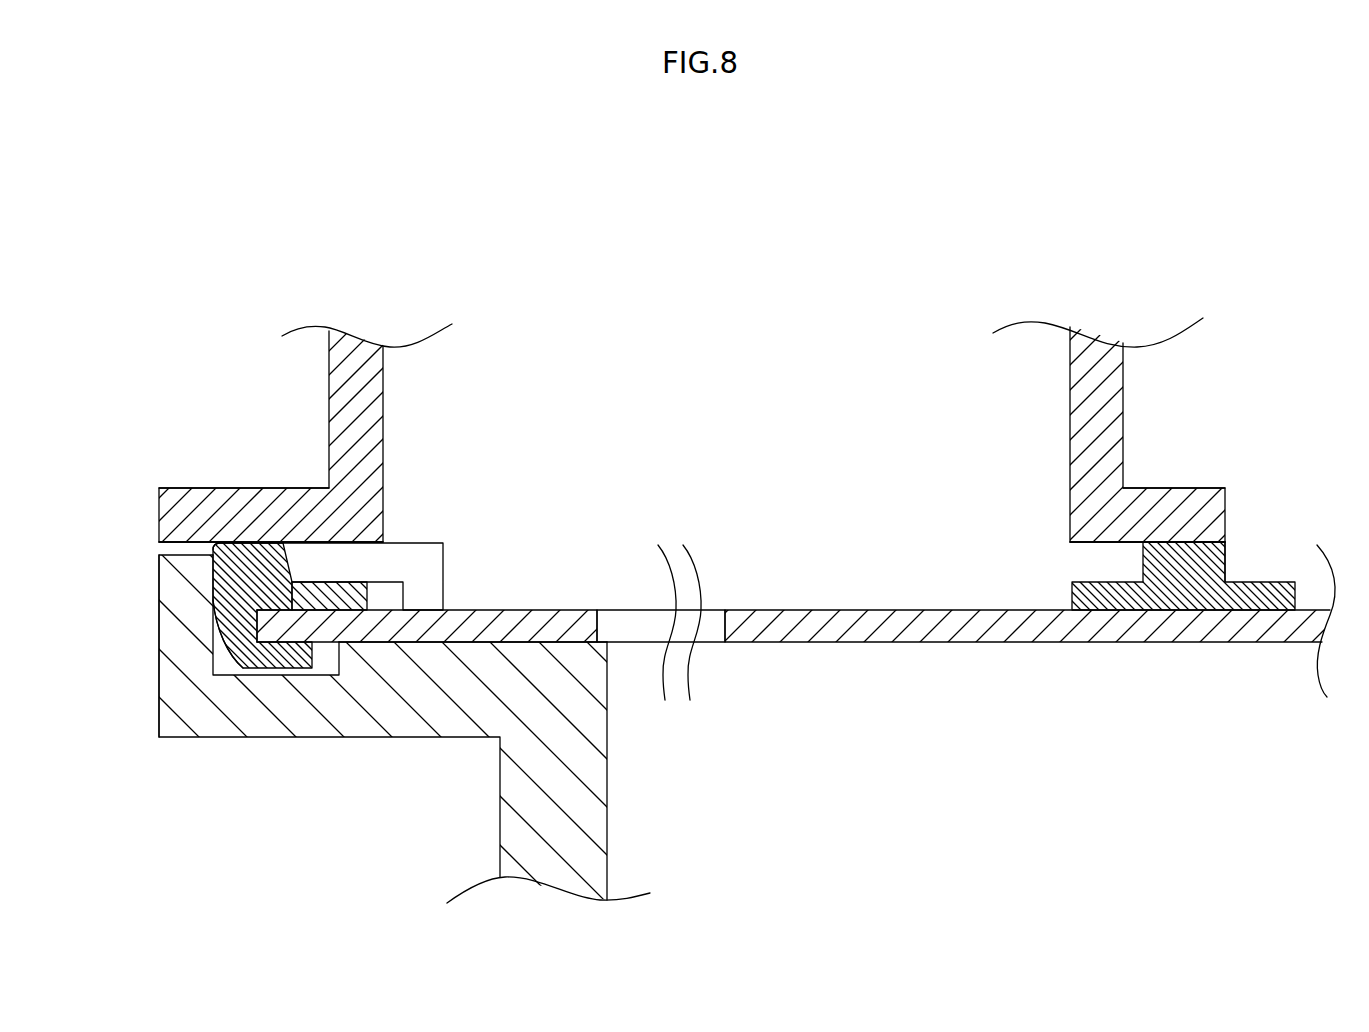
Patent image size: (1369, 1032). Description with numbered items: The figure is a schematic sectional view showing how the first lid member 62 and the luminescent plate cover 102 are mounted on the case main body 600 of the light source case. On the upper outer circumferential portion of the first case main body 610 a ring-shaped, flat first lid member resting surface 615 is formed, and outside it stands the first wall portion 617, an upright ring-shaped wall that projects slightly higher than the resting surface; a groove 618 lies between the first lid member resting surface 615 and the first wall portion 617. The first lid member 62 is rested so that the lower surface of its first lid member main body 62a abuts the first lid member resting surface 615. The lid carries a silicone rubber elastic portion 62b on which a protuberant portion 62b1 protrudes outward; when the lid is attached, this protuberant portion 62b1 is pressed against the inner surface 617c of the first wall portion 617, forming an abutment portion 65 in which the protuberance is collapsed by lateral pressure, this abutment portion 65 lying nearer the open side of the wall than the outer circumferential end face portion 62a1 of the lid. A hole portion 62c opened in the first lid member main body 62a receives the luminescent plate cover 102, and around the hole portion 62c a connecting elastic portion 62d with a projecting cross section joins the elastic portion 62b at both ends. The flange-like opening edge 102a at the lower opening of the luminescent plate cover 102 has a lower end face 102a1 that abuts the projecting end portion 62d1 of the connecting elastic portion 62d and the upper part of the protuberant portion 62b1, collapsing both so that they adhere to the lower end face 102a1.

The luminescent plate cover 102 is at (340, 398).
The opening edge 102a is at (222, 497).
The lower end face 102a1 is at (192, 540).
The first lid member 62 is at (710, 561).
The first lid member main body 62a is at (540, 617).
The outer circumferential end face portion 62a1 is at (253, 625).
The elastic portion 62b is at (443, 528).
The protuberant portion 62b1 is at (217, 550).
The hole portion 62c is at (655, 630).
The connecting elastic portion 62d is at (1250, 568).
The projecting end portion 62d1 is at (1225, 552).
The abutment portion 65 is at (212, 562).
The first lid member resting surface 615 is at (483, 633).
The first wall portion 617 is at (173, 590).
The inner surface 617c is at (228, 685).
The groove 618 is at (235, 668).
The first case main body 610 is at (517, 837).
The case main body 600 is at (476, 730).